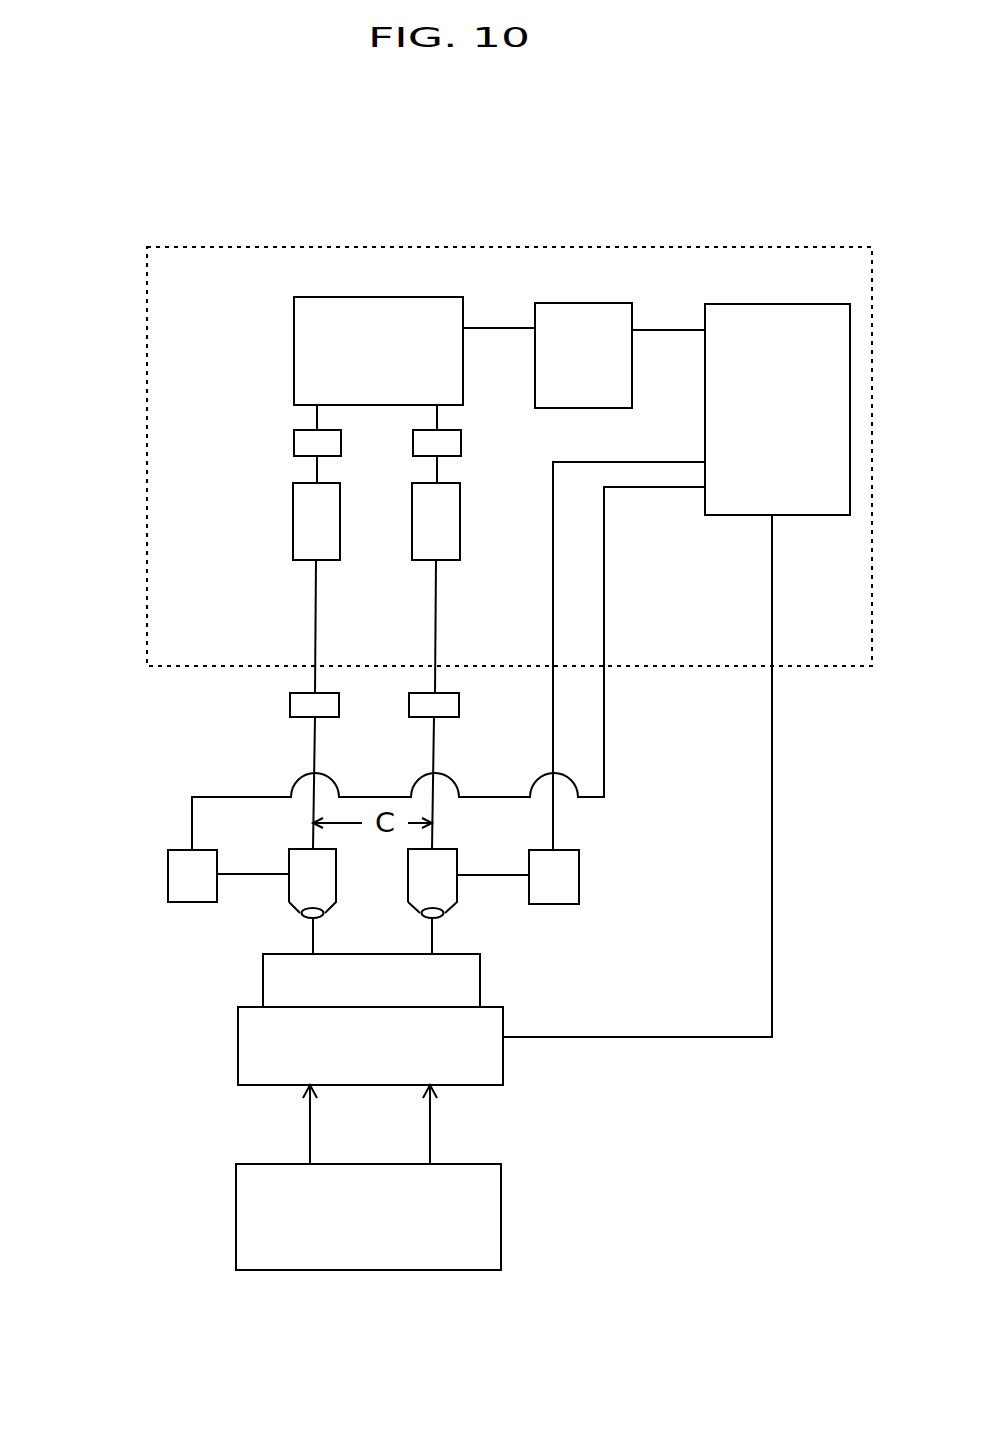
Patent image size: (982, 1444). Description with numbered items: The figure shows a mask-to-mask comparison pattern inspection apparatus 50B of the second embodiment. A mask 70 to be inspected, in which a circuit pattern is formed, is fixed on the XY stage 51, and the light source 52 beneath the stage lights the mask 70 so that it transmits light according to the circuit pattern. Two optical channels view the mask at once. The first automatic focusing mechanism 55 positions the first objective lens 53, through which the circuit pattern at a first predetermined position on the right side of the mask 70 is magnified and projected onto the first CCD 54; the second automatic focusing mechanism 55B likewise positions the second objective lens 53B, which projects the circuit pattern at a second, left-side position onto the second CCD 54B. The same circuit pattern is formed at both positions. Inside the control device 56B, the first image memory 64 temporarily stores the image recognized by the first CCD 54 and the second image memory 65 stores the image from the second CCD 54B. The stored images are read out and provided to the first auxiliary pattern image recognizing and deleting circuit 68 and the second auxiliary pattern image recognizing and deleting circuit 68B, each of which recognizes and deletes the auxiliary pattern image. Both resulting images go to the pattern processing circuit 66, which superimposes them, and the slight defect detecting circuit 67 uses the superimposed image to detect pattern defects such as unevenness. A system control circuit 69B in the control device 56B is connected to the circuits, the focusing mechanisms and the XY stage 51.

The mask-to-mask comparison pattern inspection apparatus 50B is at (718, 243).
The control device 56B is at (797, 250).
The pattern processing circuit 66 is at (294, 327).
The slight defect detecting circuit 67 is at (583, 303).
The system control circuit 69B is at (778, 304).
The second auxiliary pattern image recognizing and deleting circuit 68B is at (293, 437).
The first auxiliary pattern image recognizing and deleting circuit 68 is at (461, 436).
The second image memory 65 is at (292, 513).
The first image memory 64 is at (461, 510).
The second CCD 54B is at (292, 704).
The first CCD 54 is at (459, 708).
The second automatic focusing mechanism 55B is at (168, 873).
The first automatic focusing mechanism 55 is at (579, 878).
The second objective lens 53B is at (289, 895).
The first objective lens 53 is at (457, 895).
The mask 70 is at (263, 980).
The XY stage 51 is at (503, 1060).
The light source 52 is at (503, 1220).